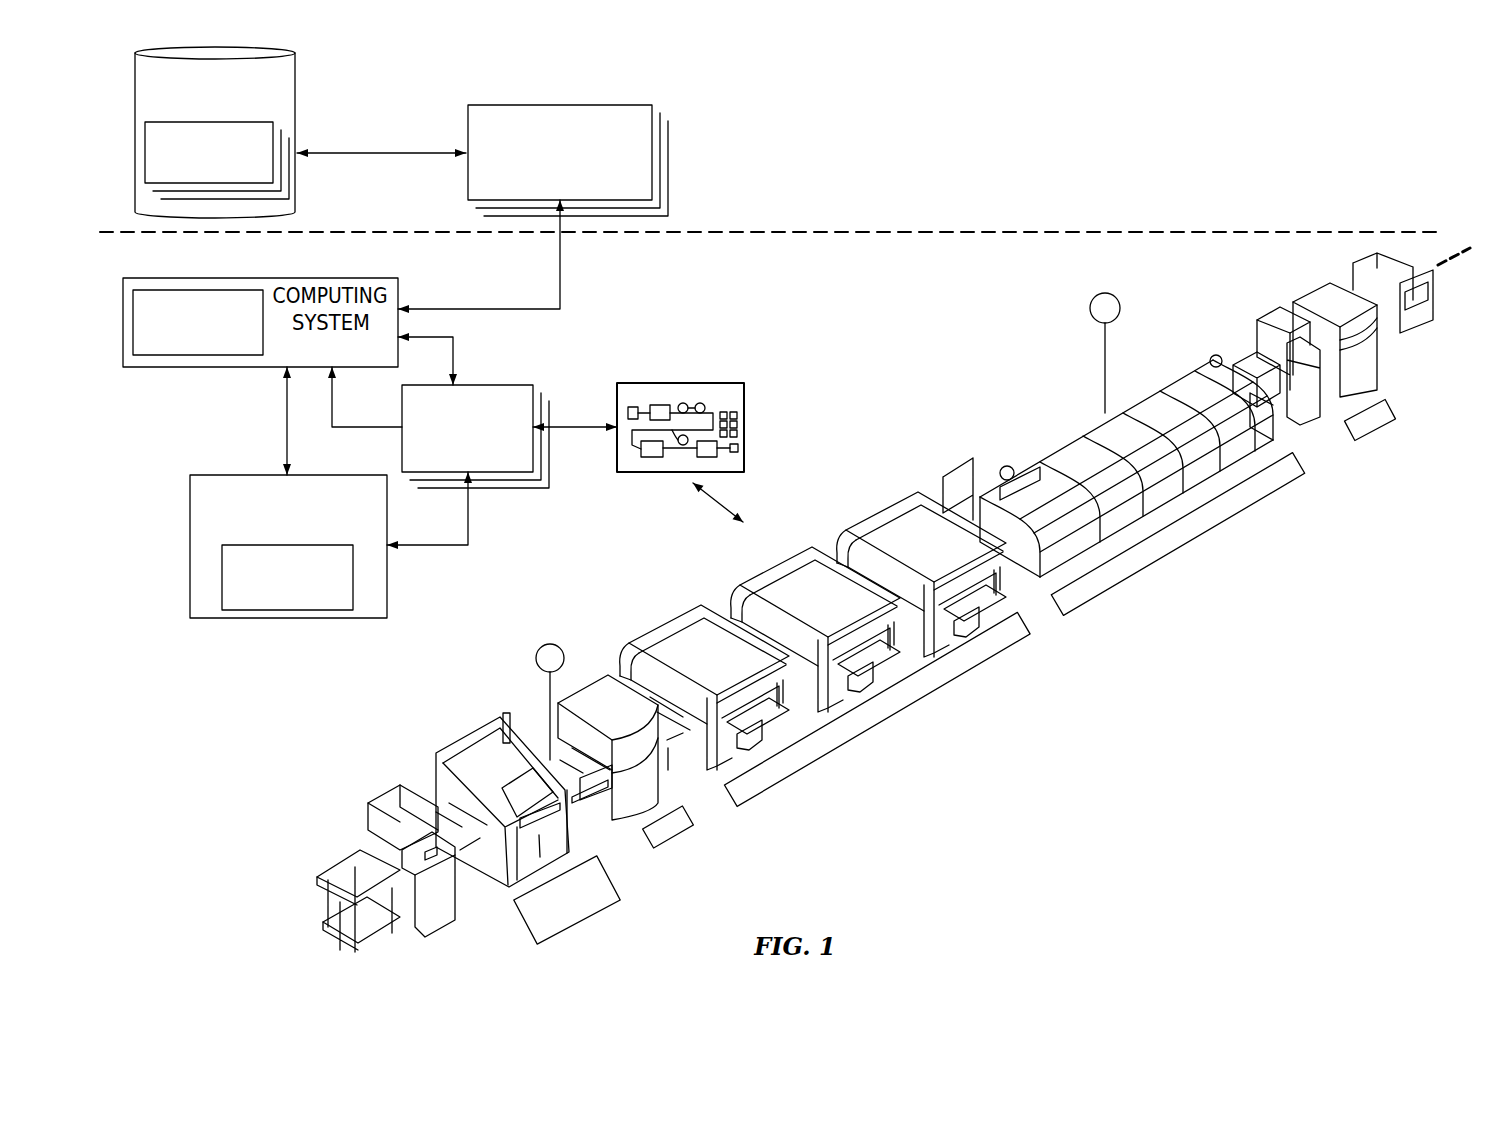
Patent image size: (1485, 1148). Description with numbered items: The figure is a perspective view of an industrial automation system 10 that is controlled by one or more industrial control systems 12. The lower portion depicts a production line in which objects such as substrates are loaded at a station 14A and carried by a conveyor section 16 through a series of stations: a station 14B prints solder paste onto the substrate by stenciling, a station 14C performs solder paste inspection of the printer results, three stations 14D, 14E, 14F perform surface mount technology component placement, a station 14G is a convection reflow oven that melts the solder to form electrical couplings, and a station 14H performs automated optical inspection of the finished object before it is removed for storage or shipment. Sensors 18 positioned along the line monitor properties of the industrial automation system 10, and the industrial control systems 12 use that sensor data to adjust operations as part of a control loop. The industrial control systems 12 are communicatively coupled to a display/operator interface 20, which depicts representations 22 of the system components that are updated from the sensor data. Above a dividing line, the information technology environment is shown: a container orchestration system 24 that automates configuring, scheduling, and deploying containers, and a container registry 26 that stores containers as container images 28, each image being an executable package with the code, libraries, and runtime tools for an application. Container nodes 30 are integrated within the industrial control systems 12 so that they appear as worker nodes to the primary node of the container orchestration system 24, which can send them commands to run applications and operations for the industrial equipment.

The industrial automation system 10 is at (1370, 98).
The industrial control system 12 is at (508, 470).
The station 14A is at (383, 790).
The station 14B is at (468, 732).
The station 14C is at (583, 687).
The station 14D is at (665, 625).
The station 14E is at (777, 563).
The station 14F is at (880, 510).
The station 14G is at (1090, 418).
The station 14H is at (1310, 288).
The conveyor section 16 is at (273, 810).
The sensor 18 is at (545, 648).
The display/operator interface 20 is at (745, 428).
The representation 22 is at (667, 392).
The container orchestration system 24 is at (468, 130).
The container registry 26 is at (297, 131).
The container image 28 is at (210, 183).
The container node 30 is at (198, 355).